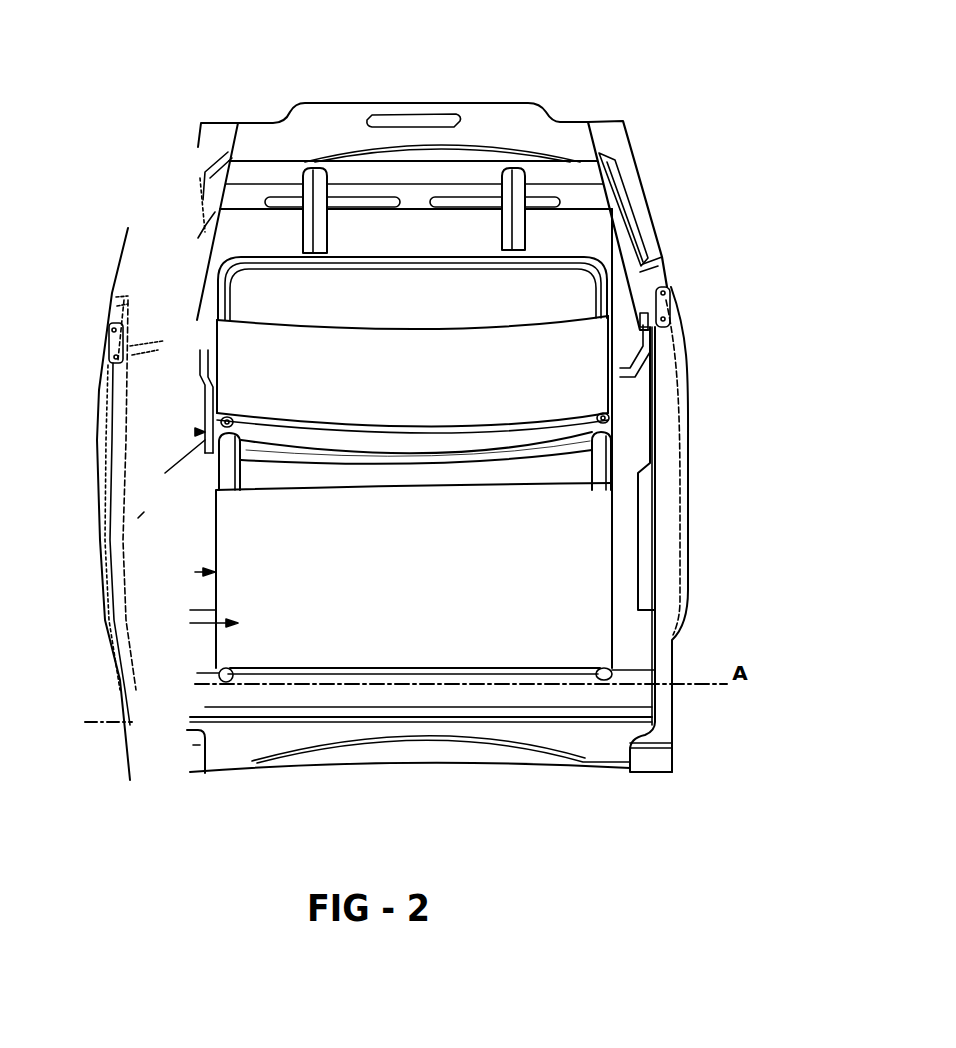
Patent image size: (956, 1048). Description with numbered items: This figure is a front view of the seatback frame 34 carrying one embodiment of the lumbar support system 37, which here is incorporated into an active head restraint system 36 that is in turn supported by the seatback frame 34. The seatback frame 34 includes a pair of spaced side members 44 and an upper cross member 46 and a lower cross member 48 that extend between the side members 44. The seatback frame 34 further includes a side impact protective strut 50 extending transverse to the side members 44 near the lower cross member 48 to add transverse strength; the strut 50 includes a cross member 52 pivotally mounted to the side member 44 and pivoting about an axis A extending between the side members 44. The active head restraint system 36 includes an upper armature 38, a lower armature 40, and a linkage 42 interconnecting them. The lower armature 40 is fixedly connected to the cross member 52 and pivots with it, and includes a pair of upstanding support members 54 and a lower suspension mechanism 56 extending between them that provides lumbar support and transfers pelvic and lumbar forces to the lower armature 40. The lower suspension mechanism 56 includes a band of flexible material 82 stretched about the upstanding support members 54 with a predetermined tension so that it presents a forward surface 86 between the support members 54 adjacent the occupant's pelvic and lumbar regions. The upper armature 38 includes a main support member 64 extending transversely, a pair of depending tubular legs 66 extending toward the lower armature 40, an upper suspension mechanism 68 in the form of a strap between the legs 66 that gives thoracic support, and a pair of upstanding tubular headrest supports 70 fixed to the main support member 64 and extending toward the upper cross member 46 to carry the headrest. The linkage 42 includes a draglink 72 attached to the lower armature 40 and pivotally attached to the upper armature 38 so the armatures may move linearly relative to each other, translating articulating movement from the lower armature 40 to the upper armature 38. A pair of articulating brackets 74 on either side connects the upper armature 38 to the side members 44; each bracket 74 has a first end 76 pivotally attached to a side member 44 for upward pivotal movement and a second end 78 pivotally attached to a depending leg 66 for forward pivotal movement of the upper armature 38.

The seatback frame 34 is at (656, 127).
The active head restraint system 36 is at (600, 232).
The lumbar support system 37 is at (626, 548).
The upper armature 38 is at (632, 287).
The lower armature 40 is at (628, 482).
The linkage 42 is at (147, 448).
The side members 44 is at (127, 224).
The upper cross member 46 is at (443, 120).
The lower cross member 48 is at (490, 768).
The side impact protective strut 50 is at (350, 731).
The cross member 52 is at (518, 709).
The upstanding support members 54 is at (240, 472).
The lower suspension mechanism 56 is at (127, 583).
The main support member 64 is at (405, 258).
The depending tubular legs 66 is at (233, 290).
The upper suspension mechanism 68 is at (400, 347).
The upstanding tubular headrest supports 70 is at (334, 180).
The draglink 72 is at (138, 518).
The articulating brackets 74 is at (633, 370).
The first end 76 is at (667, 310).
The second end 78 is at (127, 437).
The band of flexible material 82 is at (170, 637).
The forward surface 86 is at (437, 507).